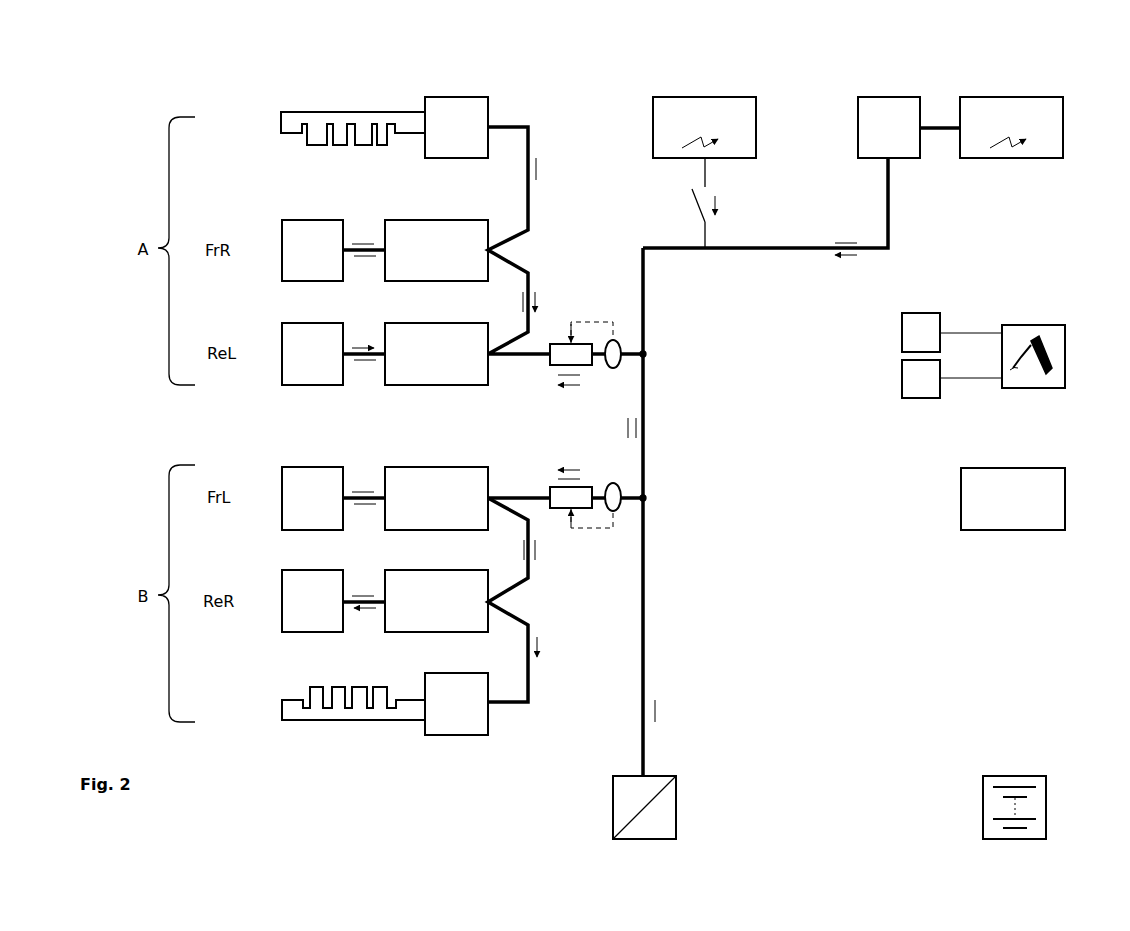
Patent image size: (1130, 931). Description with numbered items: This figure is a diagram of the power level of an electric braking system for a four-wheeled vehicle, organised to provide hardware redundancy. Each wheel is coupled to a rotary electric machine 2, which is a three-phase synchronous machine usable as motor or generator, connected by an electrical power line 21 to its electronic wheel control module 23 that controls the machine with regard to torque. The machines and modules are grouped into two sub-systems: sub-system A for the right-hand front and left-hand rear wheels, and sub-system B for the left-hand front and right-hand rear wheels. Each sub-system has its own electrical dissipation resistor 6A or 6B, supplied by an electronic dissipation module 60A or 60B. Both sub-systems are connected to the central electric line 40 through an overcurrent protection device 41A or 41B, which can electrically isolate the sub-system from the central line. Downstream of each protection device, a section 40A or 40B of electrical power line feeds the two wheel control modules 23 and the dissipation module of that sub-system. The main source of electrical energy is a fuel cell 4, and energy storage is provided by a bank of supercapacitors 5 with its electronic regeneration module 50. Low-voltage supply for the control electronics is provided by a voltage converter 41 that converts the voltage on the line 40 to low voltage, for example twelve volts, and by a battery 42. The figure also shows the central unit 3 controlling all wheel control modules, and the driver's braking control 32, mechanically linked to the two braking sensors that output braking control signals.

The rotary electric machine 2 is at (322, 219).
The electrical power line 21 is at (378, 248).
The electronic wheel control module 23 is at (418, 219).
The central unit 3 is at (1045, 468).
The fuel cell 4 is at (738, 97).
The bank of supercapacitors 5 is at (1030, 97).
The electrical dissipation resistor 6A is at (367, 112).
The electrical dissipation resistor 6B is at (367, 722).
The electronic dissipation module 60A is at (468, 96).
The electronic dissipation module 60B is at (457, 736).
The braking control 32 is at (1045, 325).
The central electric line 40 is at (650, 450).
The section of electrical power line 40A is at (531, 282).
The section of electrical power line 40B is at (522, 595).
The voltage converter 41 is at (660, 775).
The overcurrent protection device 41A is at (578, 322).
The overcurrent protection device 41B is at (576, 529).
The battery 42 is at (1028, 775).
The electronic regeneration module 50 is at (900, 97).